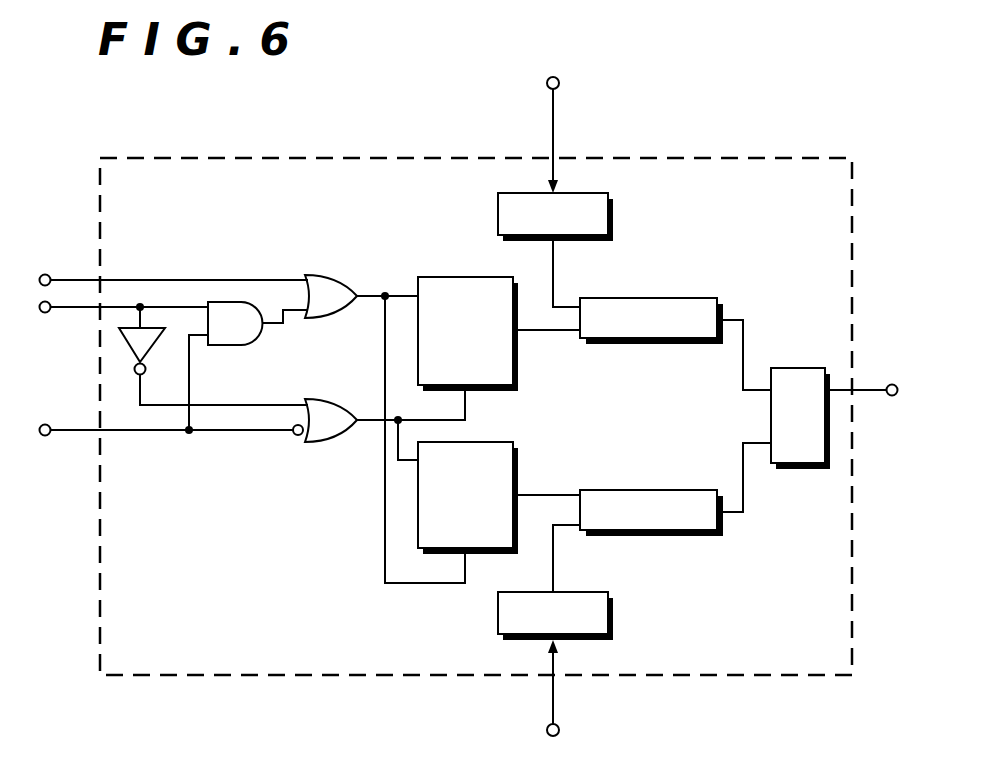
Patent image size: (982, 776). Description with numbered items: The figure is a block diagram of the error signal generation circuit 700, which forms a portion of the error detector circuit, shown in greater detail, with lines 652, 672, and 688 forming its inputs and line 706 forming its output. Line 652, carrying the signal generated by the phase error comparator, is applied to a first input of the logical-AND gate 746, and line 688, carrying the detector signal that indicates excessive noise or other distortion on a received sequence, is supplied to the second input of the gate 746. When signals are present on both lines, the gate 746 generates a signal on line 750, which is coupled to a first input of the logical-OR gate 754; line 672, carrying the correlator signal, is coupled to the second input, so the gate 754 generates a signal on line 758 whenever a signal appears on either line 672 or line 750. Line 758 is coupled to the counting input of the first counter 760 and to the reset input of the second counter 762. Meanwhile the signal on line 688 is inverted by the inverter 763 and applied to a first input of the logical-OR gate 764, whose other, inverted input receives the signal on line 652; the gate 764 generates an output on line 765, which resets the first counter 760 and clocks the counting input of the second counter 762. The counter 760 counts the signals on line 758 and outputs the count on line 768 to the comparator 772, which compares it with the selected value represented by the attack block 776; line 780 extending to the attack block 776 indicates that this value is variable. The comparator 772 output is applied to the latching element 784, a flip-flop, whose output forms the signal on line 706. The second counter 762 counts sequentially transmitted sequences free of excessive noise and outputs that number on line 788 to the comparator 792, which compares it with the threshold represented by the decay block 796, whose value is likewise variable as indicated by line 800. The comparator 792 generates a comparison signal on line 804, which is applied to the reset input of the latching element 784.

The error signal generation circuit 700 is at (197, 116).
The line 672 is at (47, 273).
The line 688 is at (46, 313).
The line 652 is at (46, 436).
The inverter 763 is at (122, 338).
The logical-AND gate 746 is at (228, 346).
The line 750 is at (284, 328).
The logical-OR gate 754 is at (324, 276).
The line 758 is at (386, 291).
The line 765 is at (370, 414).
The logical-OR gate 764 is at (318, 444).
The first counter 760 is at (466, 276).
The second counter 762 is at (518, 452).
The line 768 is at (547, 334).
The line 788 is at (546, 492).
The comparator 772 is at (647, 346).
The comparator 792 is at (648, 488).
The attack block 776 is at (614, 217).
The decay block 796 is at (613, 620).
The line 780 is at (555, 131).
The latching element 784 is at (798, 365).
The line 706 is at (872, 394).
The line 804 is at (744, 515).
The line 800 is at (554, 703).